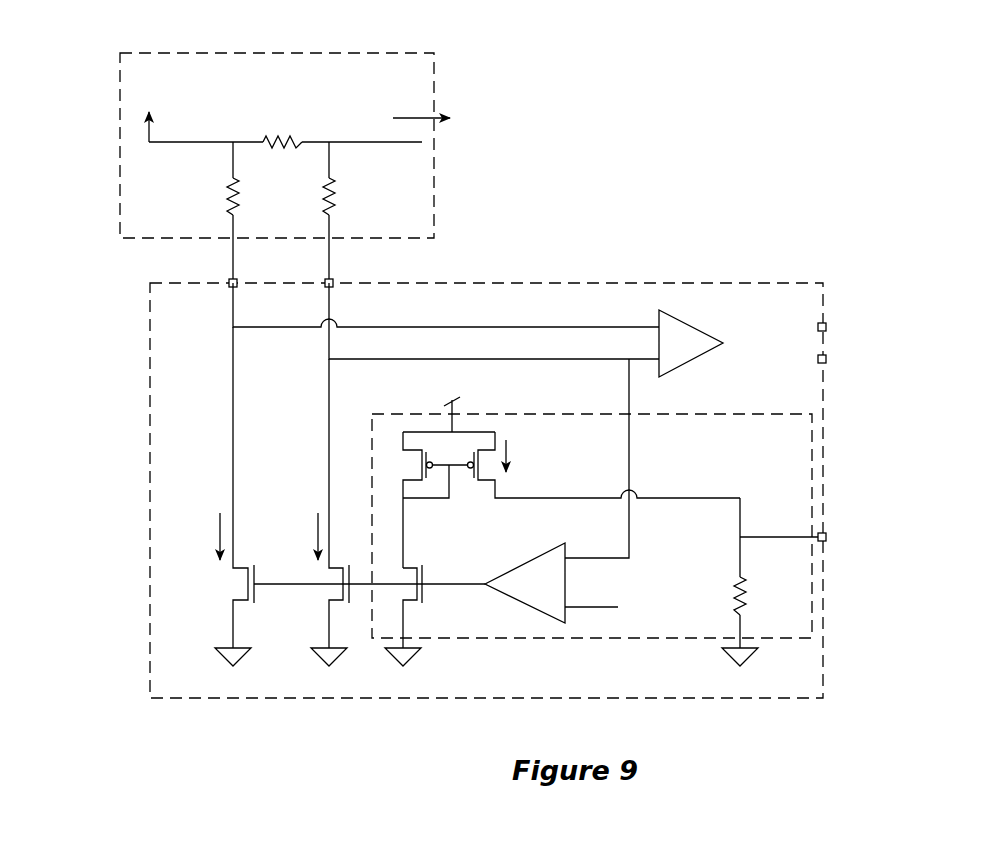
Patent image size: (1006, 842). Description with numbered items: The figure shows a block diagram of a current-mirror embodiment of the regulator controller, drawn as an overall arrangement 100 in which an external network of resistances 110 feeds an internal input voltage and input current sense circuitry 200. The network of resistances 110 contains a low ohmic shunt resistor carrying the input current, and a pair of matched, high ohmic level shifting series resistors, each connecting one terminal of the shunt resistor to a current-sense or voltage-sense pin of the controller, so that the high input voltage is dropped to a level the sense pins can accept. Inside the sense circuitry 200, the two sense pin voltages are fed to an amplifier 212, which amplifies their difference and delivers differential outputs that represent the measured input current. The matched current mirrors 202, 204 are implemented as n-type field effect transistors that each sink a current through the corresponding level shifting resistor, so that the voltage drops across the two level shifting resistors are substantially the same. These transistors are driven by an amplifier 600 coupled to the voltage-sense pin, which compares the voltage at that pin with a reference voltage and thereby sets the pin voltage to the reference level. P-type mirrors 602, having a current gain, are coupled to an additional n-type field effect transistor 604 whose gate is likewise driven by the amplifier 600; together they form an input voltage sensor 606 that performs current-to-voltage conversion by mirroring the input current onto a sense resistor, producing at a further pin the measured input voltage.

The power monitoring system 100 is at (125, 133).
The network of resistances 110 is at (443, 83).
The input voltage and input current sense circuitry 200 is at (728, 283).
The amplifier 212 is at (732, 341).
The current mirror 202 is at (190, 619).
The current mirror 204 is at (306, 621).
The amplifier 600 is at (525, 583).
The P-type mirrors 602 is at (437, 518).
The n-type FET 604 is at (428, 616).
The input voltage sensor 606 is at (814, 441).